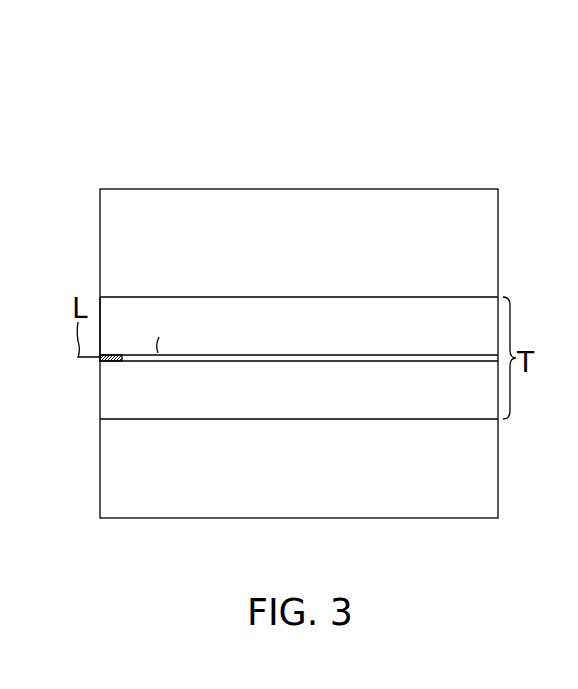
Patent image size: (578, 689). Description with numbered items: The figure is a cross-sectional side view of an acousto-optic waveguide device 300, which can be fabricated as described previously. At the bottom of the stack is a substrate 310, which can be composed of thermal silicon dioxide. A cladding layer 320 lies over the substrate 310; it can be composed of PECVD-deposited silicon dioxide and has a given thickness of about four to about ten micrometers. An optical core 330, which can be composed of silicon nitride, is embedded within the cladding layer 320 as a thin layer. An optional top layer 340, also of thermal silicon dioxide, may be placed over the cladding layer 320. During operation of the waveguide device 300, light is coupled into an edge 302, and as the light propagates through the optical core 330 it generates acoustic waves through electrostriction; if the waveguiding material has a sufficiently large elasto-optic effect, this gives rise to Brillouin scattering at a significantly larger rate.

The acousto-optic waveguide device 300 is at (158, 136).
The edge 302 is at (98, 308).
The substrate 310 is at (395, 500).
The cladding layer 320 is at (160, 407).
The optical core 330 is at (458, 363).
The top layer 340 is at (461, 207).